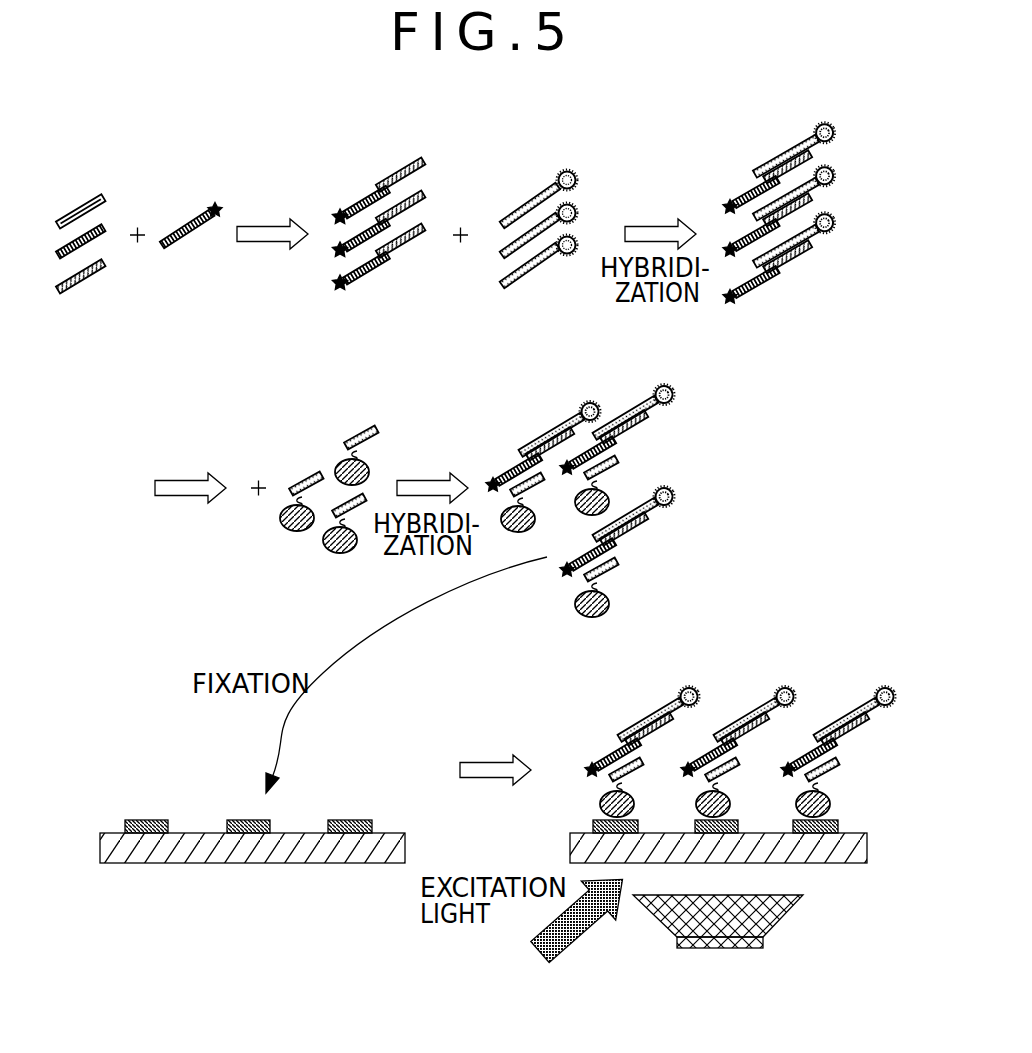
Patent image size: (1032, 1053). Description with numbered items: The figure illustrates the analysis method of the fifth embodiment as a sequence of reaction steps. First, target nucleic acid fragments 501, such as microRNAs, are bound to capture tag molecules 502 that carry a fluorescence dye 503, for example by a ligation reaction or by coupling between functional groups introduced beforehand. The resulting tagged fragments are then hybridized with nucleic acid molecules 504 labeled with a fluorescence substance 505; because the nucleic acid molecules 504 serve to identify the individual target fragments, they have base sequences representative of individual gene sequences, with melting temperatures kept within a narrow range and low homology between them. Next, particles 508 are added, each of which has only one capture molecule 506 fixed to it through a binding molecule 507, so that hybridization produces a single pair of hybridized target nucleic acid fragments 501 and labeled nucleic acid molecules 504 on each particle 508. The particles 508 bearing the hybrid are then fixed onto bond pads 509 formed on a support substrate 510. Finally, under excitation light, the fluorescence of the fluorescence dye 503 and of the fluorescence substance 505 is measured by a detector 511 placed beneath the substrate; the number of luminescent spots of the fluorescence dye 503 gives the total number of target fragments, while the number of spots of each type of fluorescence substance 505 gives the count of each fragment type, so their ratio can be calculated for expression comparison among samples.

The target nucleic acid fragments 501 is at (90, 272).
The capture tag molecules 502 is at (190, 240).
The fluorescence dye 503 is at (214, 204).
The nucleic acid molecules 504 is at (520, 207).
The fluorescence substance 505 is at (574, 174).
The capture molecule 506 is at (355, 433).
The binding molecule 507 is at (366, 462).
The particles 508 is at (335, 468).
The bond pads 509 is at (140, 819).
The support substrate 510 is at (194, 833).
The detector 511 is at (780, 916).